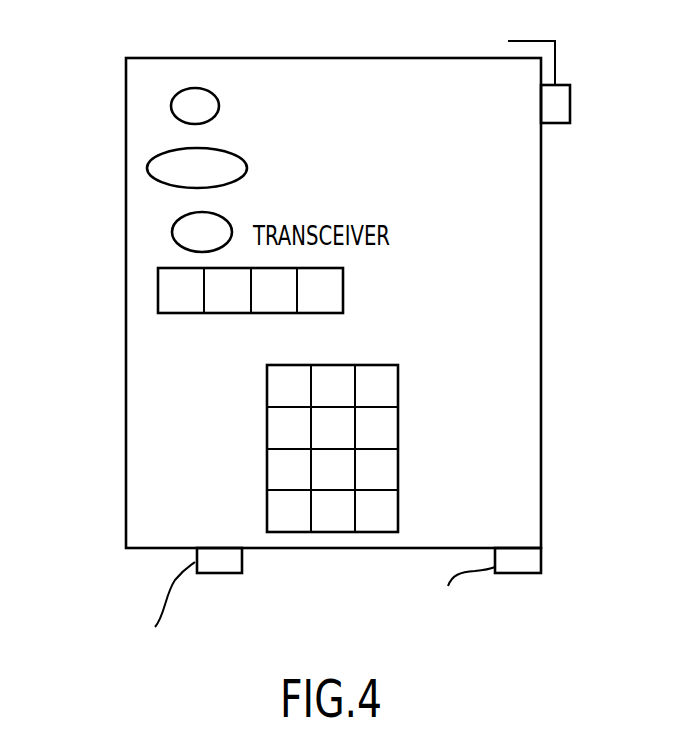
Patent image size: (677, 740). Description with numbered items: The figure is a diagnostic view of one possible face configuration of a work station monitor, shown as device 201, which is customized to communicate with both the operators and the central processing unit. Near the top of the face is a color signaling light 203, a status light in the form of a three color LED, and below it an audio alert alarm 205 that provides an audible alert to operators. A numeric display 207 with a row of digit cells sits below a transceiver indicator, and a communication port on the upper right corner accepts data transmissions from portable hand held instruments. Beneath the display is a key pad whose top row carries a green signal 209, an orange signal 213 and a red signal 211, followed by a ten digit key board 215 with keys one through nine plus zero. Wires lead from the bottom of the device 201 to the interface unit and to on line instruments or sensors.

The work station monitor device 201 is at (544, 264).
The color signaling light 203 is at (207, 96).
The audio alert alarm 205 is at (163, 172).
The numeric display 207 is at (177, 306).
The green signal 209 is at (270, 392).
The red signal 211 is at (390, 388).
The orange signal 213 is at (333, 373).
The ten digit key board 215 is at (341, 430).